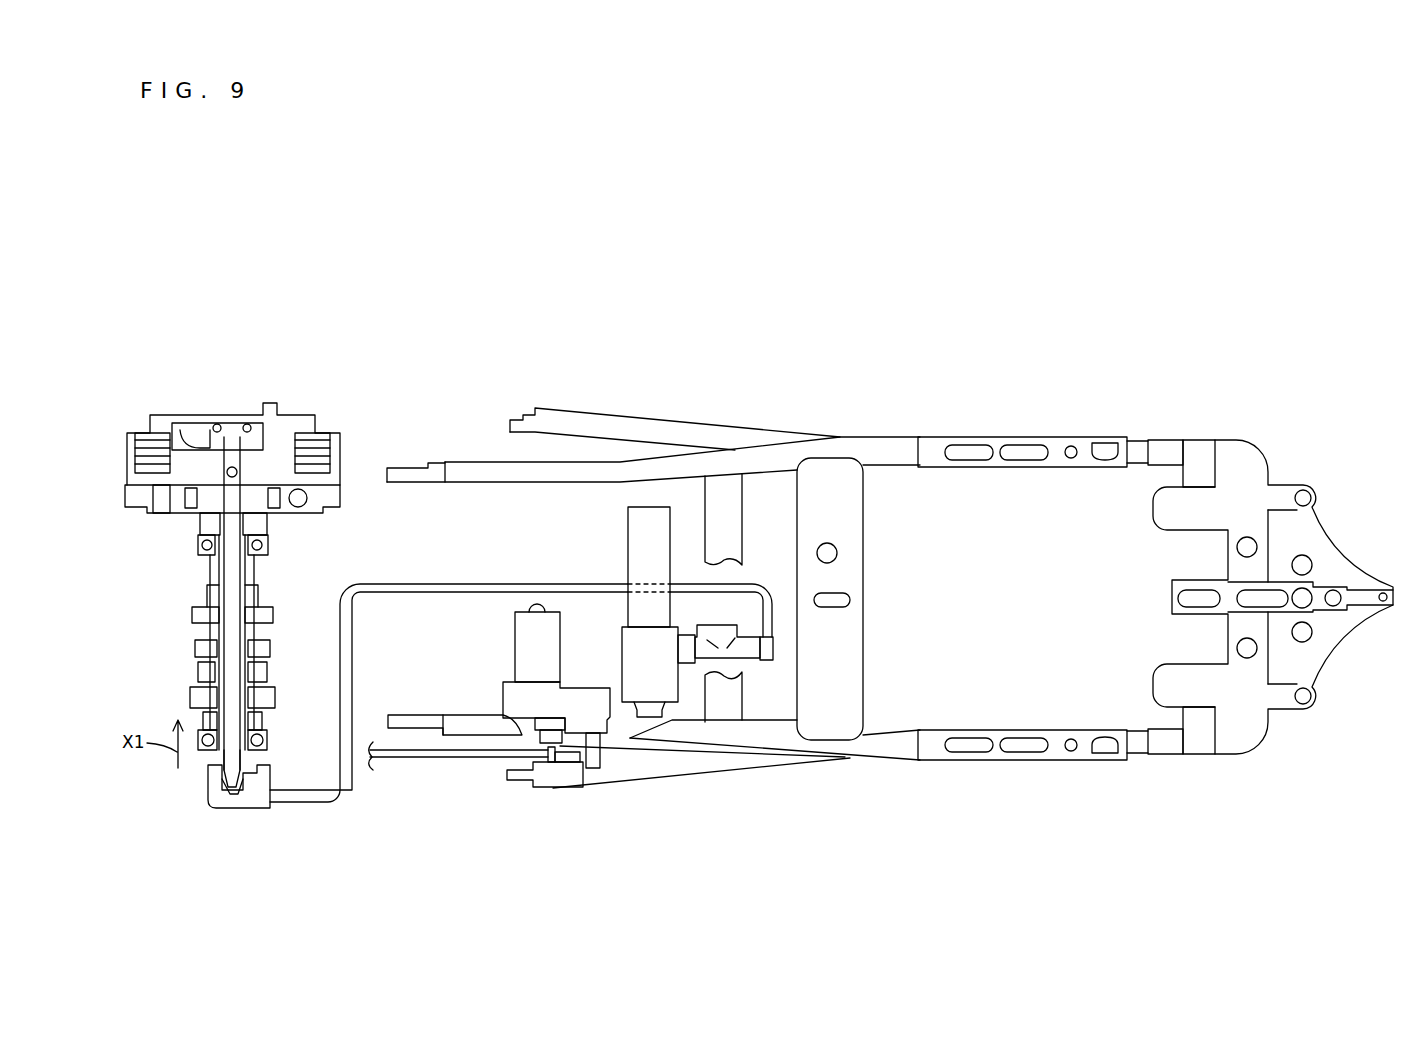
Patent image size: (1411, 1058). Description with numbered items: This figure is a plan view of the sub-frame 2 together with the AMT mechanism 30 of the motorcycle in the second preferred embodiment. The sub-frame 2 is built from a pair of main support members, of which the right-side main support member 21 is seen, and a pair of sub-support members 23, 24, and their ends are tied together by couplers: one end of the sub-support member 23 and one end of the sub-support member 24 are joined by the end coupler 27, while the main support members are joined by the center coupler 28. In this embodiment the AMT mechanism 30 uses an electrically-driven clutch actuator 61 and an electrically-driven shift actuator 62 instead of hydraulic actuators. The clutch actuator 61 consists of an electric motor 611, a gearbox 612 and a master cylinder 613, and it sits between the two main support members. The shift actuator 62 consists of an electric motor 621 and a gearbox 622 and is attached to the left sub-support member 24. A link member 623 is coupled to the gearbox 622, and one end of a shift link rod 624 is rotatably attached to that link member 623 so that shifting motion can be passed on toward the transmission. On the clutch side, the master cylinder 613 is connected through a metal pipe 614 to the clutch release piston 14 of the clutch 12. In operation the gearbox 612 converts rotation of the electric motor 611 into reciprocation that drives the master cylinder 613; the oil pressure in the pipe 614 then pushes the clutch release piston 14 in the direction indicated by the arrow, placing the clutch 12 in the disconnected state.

The sub-frame 2 is at (1130, 219).
The clutch 12 is at (133, 475).
The clutch release piston 14 is at (223, 808).
The main support member 21 is at (650, 470).
The sub-support member 23 is at (580, 420).
The sub-support member 24 is at (678, 768).
The end coupler 27 is at (1262, 545).
The center coupler 28 is at (863, 644).
The AMT mechanism 30 is at (504, 531).
The clutch actuator 61 is at (690, 596).
The electric motor 611 is at (648, 535).
The gearbox 612 is at (632, 667).
The master cylinder 613 is at (743, 647).
The metal pipe 614 is at (389, 590).
The shift actuator 62 is at (489, 688).
The electric motor 621 is at (532, 645).
The gearbox 622 is at (522, 705).
The link member 623 is at (577, 768).
The shift link rod 624 is at (390, 757).